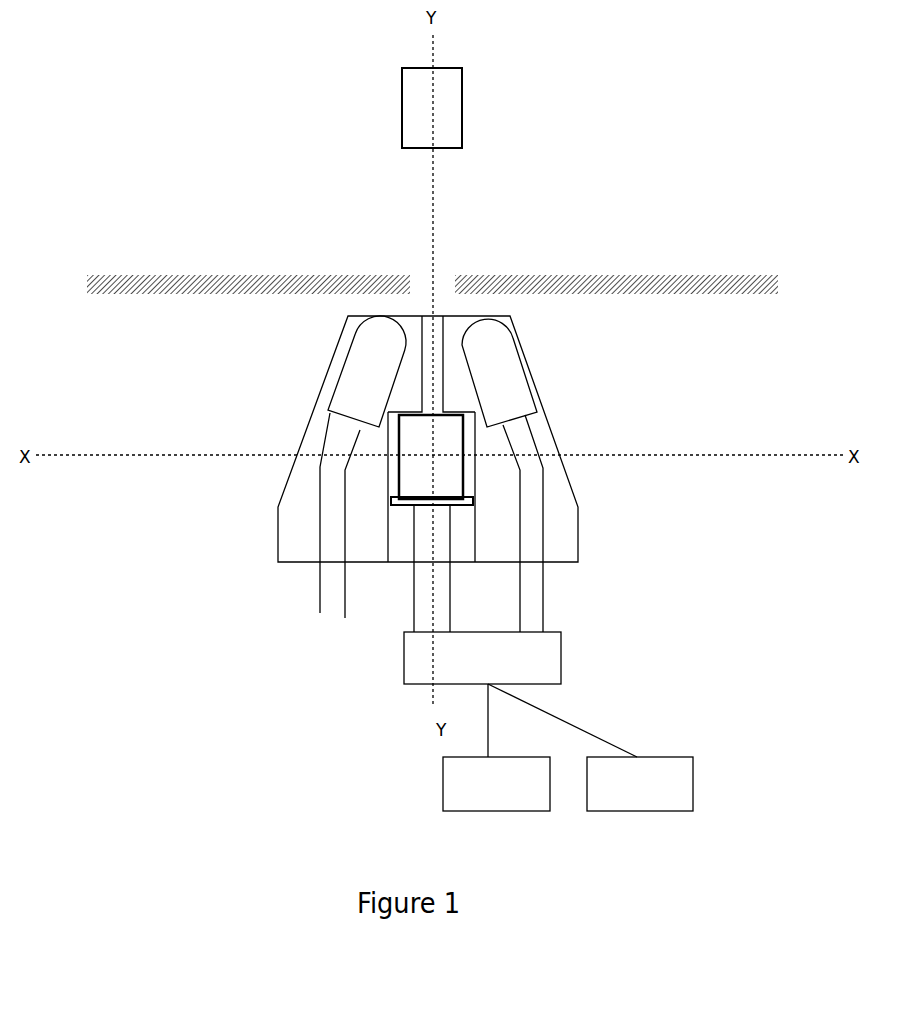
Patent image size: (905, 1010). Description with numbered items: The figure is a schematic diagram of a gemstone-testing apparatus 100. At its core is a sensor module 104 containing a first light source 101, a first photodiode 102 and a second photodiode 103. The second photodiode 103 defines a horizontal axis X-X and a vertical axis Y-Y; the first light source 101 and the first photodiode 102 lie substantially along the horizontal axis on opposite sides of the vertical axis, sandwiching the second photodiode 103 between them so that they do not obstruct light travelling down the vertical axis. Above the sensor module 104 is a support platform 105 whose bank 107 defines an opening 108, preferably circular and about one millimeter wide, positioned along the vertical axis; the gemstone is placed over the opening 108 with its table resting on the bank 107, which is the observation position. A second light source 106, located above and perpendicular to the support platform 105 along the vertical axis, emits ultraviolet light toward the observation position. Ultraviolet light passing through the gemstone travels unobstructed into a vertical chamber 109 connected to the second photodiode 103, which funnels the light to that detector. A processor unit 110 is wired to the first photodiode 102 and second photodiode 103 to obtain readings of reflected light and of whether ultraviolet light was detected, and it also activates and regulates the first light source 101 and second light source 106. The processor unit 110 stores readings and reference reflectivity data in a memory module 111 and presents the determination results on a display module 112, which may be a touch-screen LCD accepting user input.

The apparatus 100 is at (758, 114).
The first light source 101 is at (363, 362).
The first photodiode 102 is at (510, 383).
The second photodiode 103 is at (410, 440).
The sensor module 104 is at (290, 541).
The support platform 105 is at (287, 277).
The second light source 106 is at (422, 98).
The bank 107 is at (503, 275).
The opening 108 is at (442, 282).
The vertical chamber 109 is at (443, 388).
The processor unit 110 is at (545, 657).
The memory module 111 is at (452, 782).
The display module 112 is at (687, 782).